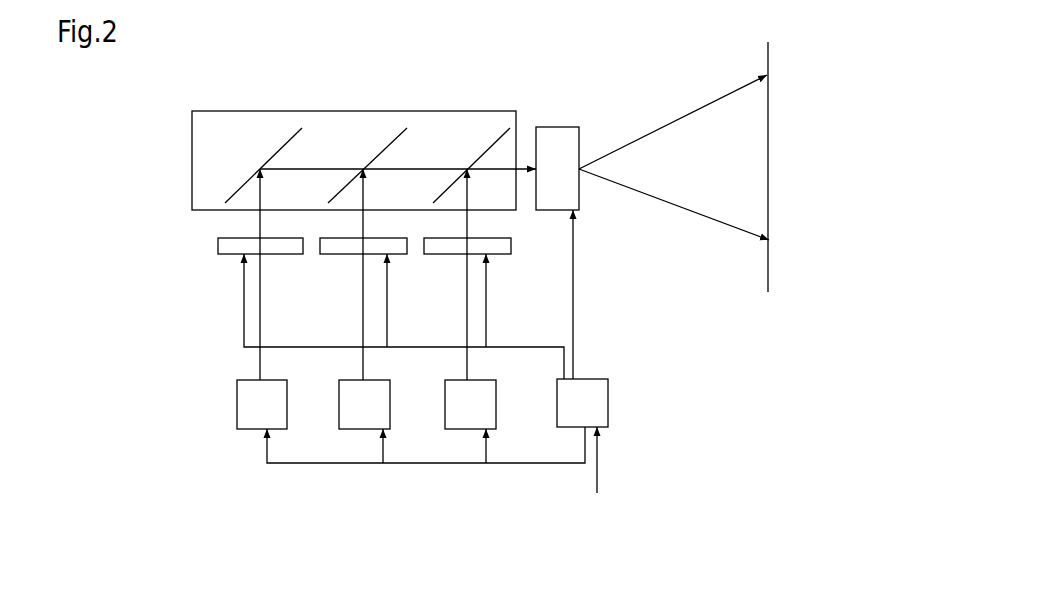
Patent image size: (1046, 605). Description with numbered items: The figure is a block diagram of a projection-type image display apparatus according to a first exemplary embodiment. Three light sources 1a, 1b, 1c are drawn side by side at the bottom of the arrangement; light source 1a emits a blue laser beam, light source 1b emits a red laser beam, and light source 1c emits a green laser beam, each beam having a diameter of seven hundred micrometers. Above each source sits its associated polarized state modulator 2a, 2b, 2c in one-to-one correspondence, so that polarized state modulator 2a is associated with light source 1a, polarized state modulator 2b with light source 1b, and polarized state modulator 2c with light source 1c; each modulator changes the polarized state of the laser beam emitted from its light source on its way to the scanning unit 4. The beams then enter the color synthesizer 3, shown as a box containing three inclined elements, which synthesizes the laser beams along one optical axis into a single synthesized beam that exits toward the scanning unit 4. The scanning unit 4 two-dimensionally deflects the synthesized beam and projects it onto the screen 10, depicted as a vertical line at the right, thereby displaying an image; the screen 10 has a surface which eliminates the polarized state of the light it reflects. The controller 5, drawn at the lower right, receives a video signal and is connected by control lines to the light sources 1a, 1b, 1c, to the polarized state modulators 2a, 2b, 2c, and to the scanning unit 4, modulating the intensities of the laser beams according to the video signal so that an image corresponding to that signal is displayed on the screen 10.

The light source 1a is at (461, 430).
The light source 1b is at (355, 430).
The light source 1c is at (253, 430).
The polarized state modulator 2a is at (511, 248).
The polarized state modulator 2b is at (343, 254).
The polarized state modulator 2c is at (218, 246).
The color synthesizer 3 is at (192, 175).
The scanning unit 4 is at (565, 127).
The controller 5 is at (608, 417).
The screen 10 is at (769, 277).